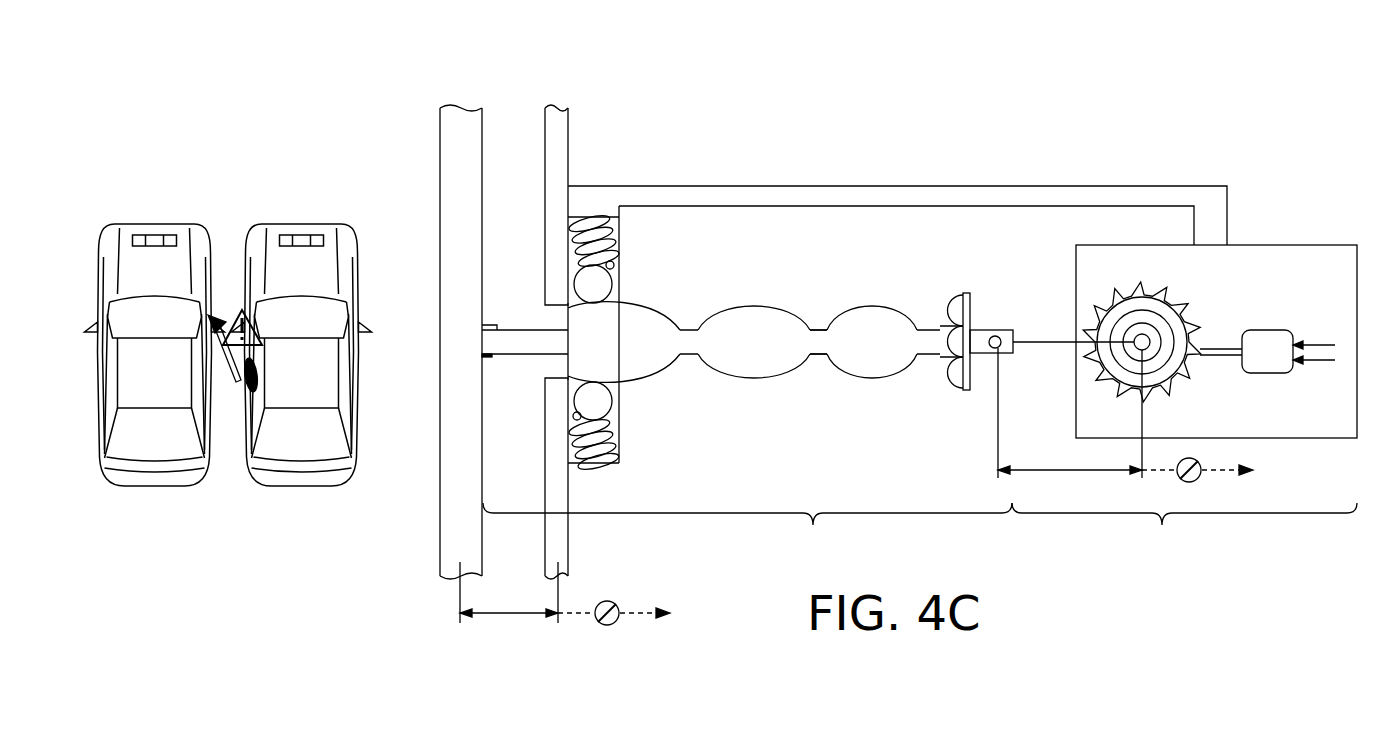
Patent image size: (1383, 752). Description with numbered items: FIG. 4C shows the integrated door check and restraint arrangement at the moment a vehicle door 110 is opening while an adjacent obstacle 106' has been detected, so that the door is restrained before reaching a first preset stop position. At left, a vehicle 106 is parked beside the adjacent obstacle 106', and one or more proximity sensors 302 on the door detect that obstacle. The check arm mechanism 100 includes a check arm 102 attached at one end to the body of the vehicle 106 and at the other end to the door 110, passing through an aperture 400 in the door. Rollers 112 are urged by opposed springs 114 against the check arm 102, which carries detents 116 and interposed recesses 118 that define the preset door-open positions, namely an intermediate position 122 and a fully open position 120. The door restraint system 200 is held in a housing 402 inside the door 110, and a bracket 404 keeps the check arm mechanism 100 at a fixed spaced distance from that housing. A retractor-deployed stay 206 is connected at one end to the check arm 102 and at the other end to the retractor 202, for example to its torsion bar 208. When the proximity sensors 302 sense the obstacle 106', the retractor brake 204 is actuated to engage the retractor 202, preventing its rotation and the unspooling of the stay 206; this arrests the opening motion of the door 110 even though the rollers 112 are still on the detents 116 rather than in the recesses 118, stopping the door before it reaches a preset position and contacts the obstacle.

The check arm mechanism 100 is at (747, 530).
The check arm 102 is at (770, 243).
The vehicle 106 is at (288, 311).
The adjacent obstacle 106' is at (302, 332).
The vehicle door 110 is at (218, 378).
The rollers 112 is at (610, 280).
The springs 114 is at (610, 225).
The detents 116 is at (757, 318).
The recesses 118 is at (820, 330).
The fully open position 120 is at (817, 365).
The intermediate position 122 is at (687, 365).
The door restraint system 200 is at (1184, 531).
The retractor 202 is at (1125, 287).
The retractor brake 204 is at (1268, 366).
The retractor-deployed stay 206 is at (1040, 342).
The torsion bar 208 is at (1150, 349).
The proximity sensors 302 is at (257, 373).
The aperture 400 is at (556, 317).
The housing 402 is at (1263, 252).
The bracket 404 is at (990, 192).